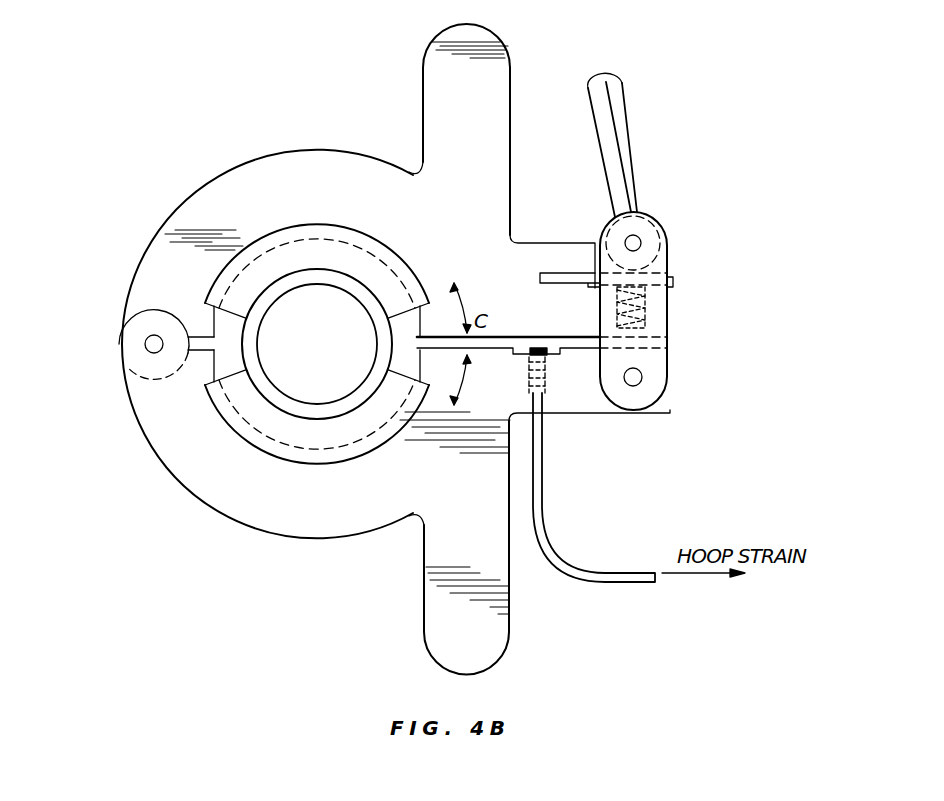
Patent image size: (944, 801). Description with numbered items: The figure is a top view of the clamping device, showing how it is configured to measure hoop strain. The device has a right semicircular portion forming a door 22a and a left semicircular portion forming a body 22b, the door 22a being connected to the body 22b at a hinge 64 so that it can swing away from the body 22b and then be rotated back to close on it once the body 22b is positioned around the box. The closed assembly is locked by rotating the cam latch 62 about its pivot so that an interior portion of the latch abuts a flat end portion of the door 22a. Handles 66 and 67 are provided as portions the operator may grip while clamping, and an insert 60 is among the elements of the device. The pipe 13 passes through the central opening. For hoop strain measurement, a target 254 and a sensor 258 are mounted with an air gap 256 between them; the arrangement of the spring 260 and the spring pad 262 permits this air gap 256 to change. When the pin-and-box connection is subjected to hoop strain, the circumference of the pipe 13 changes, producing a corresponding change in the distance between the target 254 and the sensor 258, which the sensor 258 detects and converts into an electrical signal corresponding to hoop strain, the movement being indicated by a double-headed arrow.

The door 22a is at (230, 178).
The body 22b is at (332, 502).
The pipe 13 is at (358, 315).
The insert 60 is at (210, 395).
The hinge 64 is at (147, 338).
The handle 66 is at (480, 106).
The handle 67 is at (478, 637).
The cam latch 62 is at (643, 242).
The spring pad 262 is at (672, 279).
The spring 260 is at (645, 310).
The air gap 256 is at (540, 343).
The sensor 258 is at (547, 397).
The target 254 is at (536, 336).